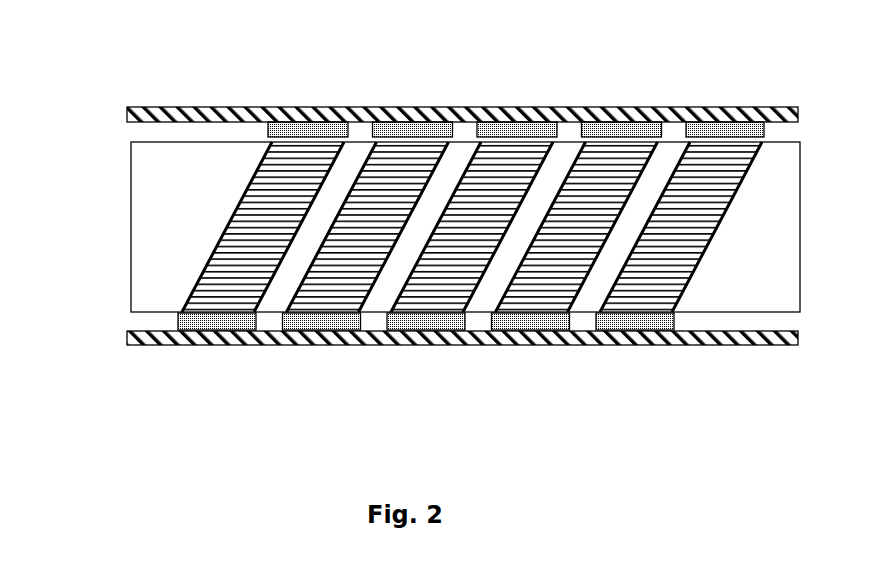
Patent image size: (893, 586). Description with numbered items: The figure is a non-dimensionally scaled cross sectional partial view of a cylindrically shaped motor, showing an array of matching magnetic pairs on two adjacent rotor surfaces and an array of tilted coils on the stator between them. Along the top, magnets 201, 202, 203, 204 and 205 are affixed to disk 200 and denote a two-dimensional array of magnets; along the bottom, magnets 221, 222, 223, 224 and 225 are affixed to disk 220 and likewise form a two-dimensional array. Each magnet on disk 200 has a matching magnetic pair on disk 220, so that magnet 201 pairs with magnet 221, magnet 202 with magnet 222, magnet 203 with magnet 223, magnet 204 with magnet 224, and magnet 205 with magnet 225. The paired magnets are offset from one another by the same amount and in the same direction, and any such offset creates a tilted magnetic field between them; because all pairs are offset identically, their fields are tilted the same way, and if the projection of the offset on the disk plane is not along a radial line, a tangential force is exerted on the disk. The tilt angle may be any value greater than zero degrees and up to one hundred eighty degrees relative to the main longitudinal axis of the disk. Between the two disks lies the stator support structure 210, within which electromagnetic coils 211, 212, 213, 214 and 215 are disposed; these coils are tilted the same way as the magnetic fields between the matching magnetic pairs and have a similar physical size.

The disk 200 is at (167, 107).
The magnet 201 is at (301, 108).
The magnet 202 is at (405, 108).
The magnet 203 is at (517, 108).
The magnet 204 is at (620, 108).
The magnet 205 is at (725, 108).
The stator support structure 210 is at (131, 226).
The electromagnetic coil 211 is at (262, 150).
The electromagnetic coil 212 is at (371, 150).
The electromagnetic coil 213 is at (475, 150).
The electromagnetic coil 214 is at (581, 150).
The electromagnetic coil 215 is at (684, 150).
The disk 220 is at (147, 347).
The magnet 221 is at (221, 346).
The magnet 222 is at (318, 346).
The magnet 223 is at (420, 346).
The magnet 224 is at (530, 346).
The magnet 225 is at (628, 346).